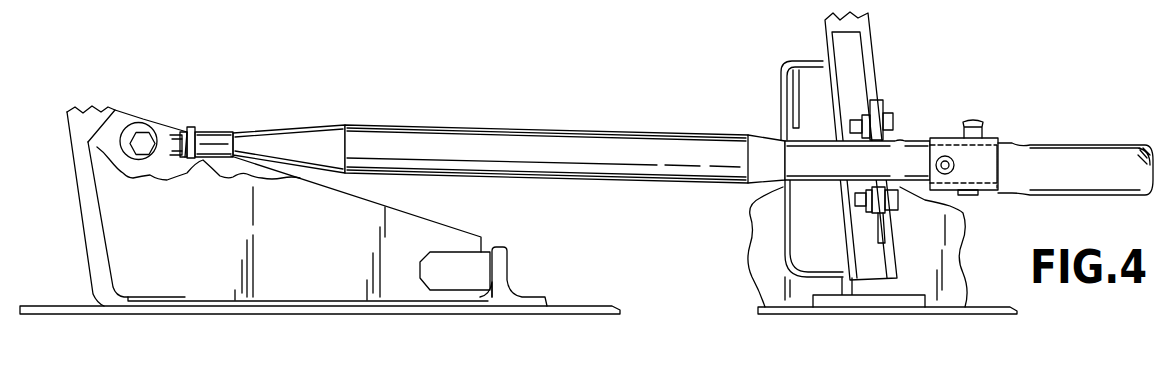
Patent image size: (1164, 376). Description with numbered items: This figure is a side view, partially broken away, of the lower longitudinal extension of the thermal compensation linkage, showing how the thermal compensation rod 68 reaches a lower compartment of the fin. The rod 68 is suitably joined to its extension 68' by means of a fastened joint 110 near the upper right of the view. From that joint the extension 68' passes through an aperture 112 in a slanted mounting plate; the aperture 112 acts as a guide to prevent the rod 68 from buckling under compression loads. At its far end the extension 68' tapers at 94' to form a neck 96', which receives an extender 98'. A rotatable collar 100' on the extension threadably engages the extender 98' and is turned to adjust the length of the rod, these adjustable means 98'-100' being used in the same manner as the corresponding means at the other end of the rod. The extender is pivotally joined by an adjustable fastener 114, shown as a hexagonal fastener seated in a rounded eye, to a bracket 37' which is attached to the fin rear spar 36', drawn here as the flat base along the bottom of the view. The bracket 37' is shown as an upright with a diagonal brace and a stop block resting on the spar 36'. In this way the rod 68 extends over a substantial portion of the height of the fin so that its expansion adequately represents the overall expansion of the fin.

The fin rear spar 36' is at (518, 290).
The bracket 37' is at (293, 206).
The compensation rod extension 68' is at (565, 137).
The thermal compensation rod 68 is at (1075, 150).
The taper 94' is at (289, 131).
The neck 96' is at (220, 123).
The extender 98' is at (178, 119).
The rotatable collar 100' is at (206, 181).
The fastened joint 110 is at (990, 132).
The aperture 112 is at (888, 140).
The adjustable fastener 114 is at (143, 132).